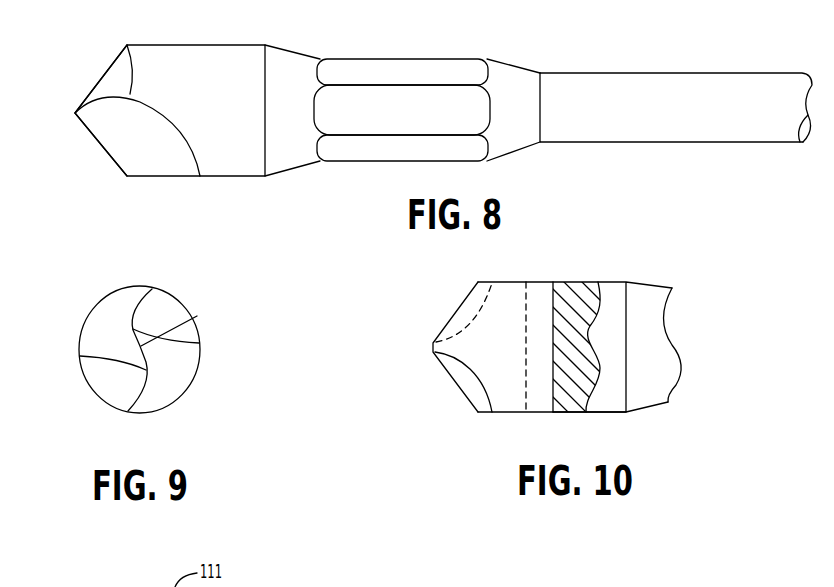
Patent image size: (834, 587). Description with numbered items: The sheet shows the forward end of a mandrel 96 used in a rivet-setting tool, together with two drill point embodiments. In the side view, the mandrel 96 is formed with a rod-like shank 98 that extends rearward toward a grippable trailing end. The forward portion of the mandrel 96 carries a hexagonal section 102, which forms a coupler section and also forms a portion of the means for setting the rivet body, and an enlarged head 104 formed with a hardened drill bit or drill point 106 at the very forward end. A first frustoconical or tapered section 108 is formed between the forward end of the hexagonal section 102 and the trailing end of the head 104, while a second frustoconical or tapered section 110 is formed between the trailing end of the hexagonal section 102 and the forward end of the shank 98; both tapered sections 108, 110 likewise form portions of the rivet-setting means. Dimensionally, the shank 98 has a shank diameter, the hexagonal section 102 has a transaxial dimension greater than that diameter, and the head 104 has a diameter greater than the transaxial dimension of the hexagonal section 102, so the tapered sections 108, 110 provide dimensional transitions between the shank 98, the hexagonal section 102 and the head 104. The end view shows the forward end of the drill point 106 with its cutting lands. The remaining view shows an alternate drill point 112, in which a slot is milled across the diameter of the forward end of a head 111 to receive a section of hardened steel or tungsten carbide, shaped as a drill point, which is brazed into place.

In FIG. 8, the mandrel 96 is at (609, 40).
In FIG. 8, the rod-like shank 98 is at (712, 80).
In FIG. 8, the hexagonal section 102 is at (402, 65).
In FIG. 8, the enlarged head 104 is at (237, 52).
In FIG. 9, the enlarged head 104 is at (192, 377).
In FIG. 8, the hardened drill point 106 is at (83, 127).
In FIG. 9, the hardened drill point 106 is at (197, 316).
In FIG. 8, the first frustoconical tapered section 108 is at (290, 163).
In FIG. 10, the first frustoconical tapered section 108 is at (640, 293).
In FIG. 8, the second frustoconical tapered section 110 is at (507, 143).
In FIG. 10, the head 111 is at (605, 403).
In FIG. 10, the drill point 112 is at (452, 327).